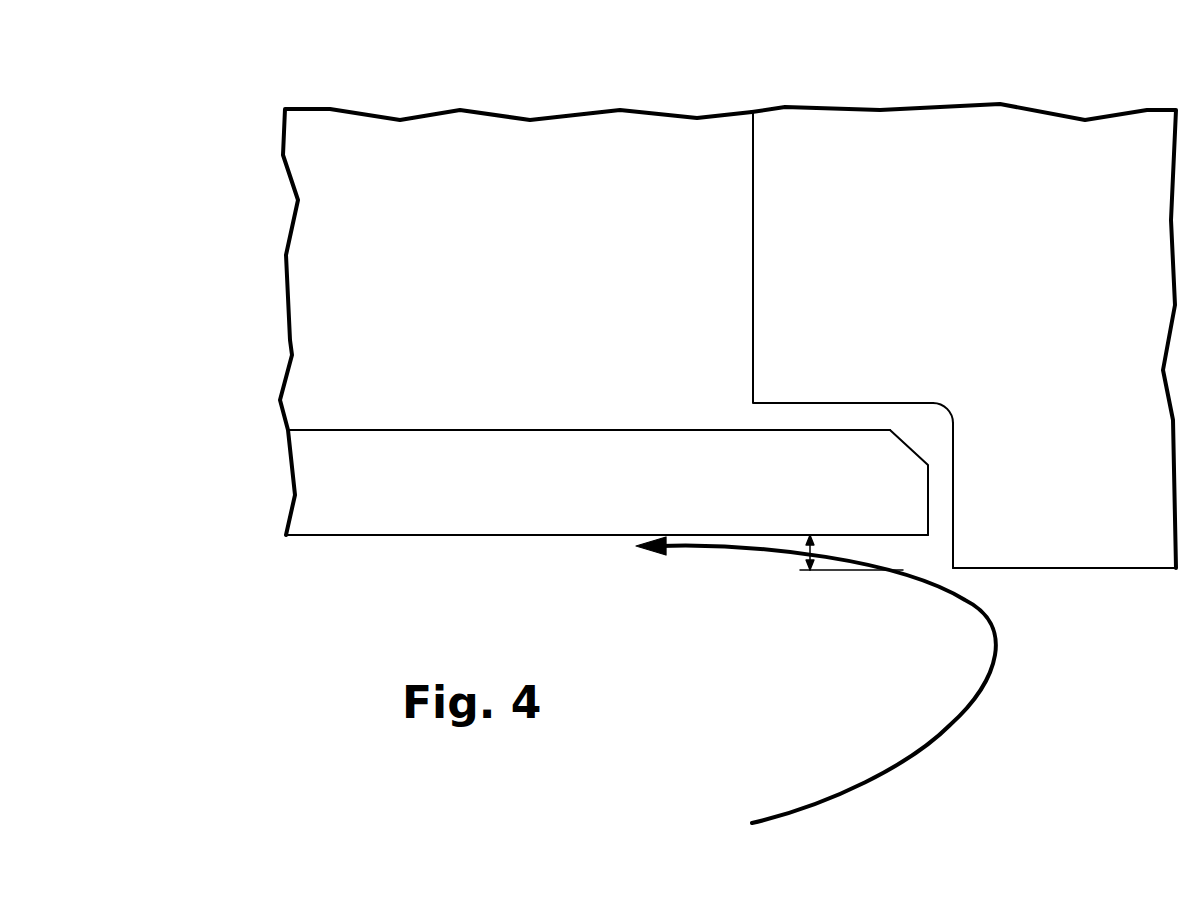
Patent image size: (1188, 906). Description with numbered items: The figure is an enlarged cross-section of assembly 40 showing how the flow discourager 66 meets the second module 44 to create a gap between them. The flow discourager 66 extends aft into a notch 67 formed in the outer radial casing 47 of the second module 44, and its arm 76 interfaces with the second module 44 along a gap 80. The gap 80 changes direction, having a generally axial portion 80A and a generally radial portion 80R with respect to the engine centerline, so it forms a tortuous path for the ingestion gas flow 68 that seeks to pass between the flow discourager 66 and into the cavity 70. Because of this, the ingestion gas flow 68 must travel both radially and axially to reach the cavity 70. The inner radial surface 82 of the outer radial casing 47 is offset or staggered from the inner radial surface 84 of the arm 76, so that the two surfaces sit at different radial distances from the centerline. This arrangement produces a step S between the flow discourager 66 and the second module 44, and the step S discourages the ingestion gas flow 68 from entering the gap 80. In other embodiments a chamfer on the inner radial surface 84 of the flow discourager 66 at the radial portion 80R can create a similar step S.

The assembly 40 is at (455, 140).
The second module 44 is at (1042, 128).
The cavity 70 is at (396, 225).
The outer radial casing 47 is at (977, 257).
The flow discourager 66 is at (322, 493).
The arm 76 is at (450, 458).
The inner radial surface 84 is at (447, 537).
The axial portion 80A is at (855, 392).
The notch 67 is at (960, 378).
The gap 80 is at (968, 410).
The radial portion 80R is at (962, 470).
The inner radial surface 82 is at (1130, 570).
The ingestion gas flow 68 is at (960, 712).
The step S is at (805, 556).